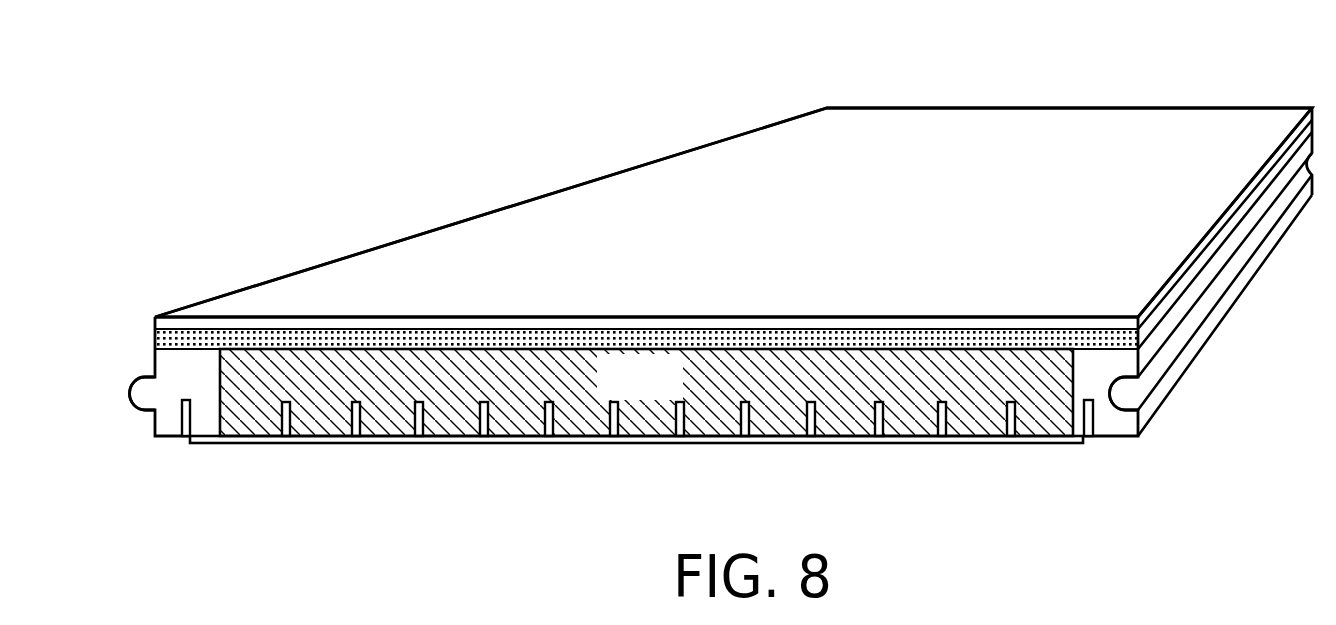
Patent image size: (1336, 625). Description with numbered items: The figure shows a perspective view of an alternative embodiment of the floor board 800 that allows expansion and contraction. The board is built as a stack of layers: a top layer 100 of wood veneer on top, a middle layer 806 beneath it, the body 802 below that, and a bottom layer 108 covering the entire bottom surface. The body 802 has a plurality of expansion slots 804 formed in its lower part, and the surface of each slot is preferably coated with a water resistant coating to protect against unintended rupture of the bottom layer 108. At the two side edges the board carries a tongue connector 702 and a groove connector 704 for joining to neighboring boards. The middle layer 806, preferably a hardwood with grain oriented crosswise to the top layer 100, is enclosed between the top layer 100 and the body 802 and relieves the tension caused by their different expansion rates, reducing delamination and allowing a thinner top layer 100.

The floor board 800 is at (689, 288).
The top layer 100 is at (840, 253).
The middle layer 806 is at (155, 340).
The body 802 is at (667, 394).
The expansion slots 804 is at (678, 437).
The bottom layer 108 is at (527, 445).
The tongue connector 702 is at (202, 443).
The groove connector 704 is at (1105, 430).